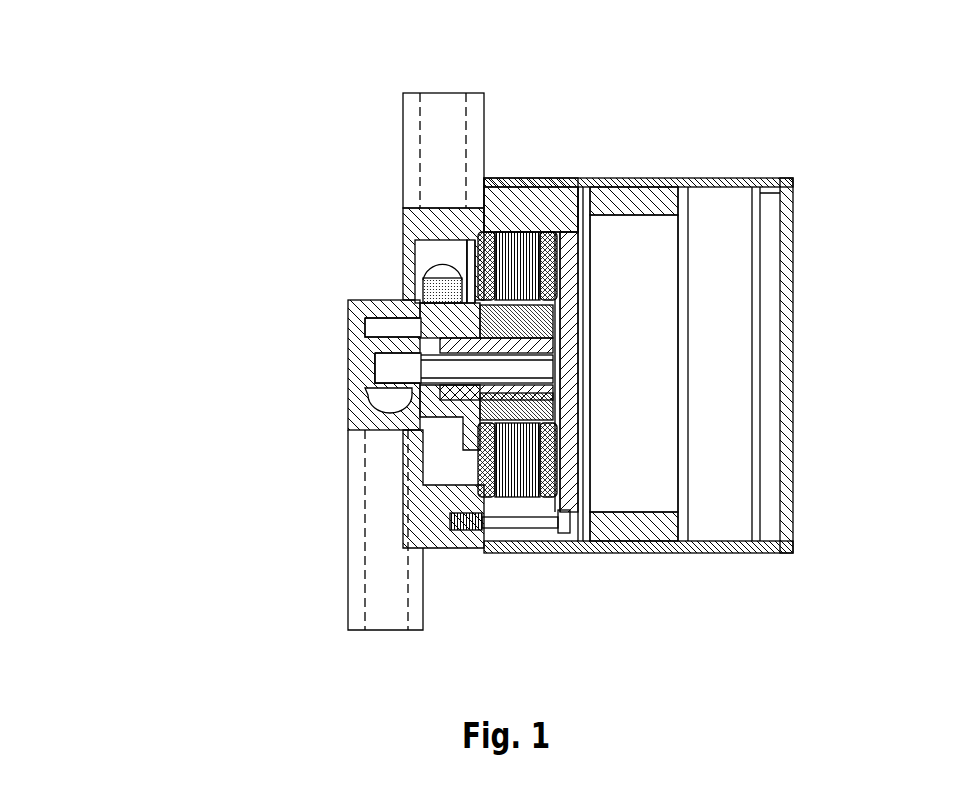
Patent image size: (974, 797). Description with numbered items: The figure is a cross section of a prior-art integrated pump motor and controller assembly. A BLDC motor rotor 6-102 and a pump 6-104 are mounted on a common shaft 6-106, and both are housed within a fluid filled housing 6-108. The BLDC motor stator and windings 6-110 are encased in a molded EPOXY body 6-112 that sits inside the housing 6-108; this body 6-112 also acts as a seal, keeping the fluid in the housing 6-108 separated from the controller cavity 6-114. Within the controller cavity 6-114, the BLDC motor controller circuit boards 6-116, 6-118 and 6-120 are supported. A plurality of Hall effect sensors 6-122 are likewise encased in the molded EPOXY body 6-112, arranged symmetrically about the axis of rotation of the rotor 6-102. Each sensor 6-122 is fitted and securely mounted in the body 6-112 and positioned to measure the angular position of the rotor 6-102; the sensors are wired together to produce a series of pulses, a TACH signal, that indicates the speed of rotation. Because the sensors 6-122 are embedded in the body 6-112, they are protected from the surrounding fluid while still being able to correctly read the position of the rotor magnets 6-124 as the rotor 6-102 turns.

The BLDC motor rotor 6-102 is at (532, 408).
The pump 6-104 is at (443, 342).
The common shaft 6-106 is at (535, 367).
The fluid filled housing 6-108 is at (613, 527).
The BLDC motor stator and windings 6-110 is at (518, 477).
The molded EPOXY body 6-112 is at (520, 203).
The controller cavity 6-114 is at (650, 484).
The BLDC motor controller circuit board 6-116 is at (585, 222).
The BLDC motor controller circuit board 6-118 is at (678, 247).
The BLDC motor controller circuit board 6-120 is at (757, 230).
The Hall effect sensor 6-122 is at (562, 220).
The rotor magnets 6-124 is at (460, 278).